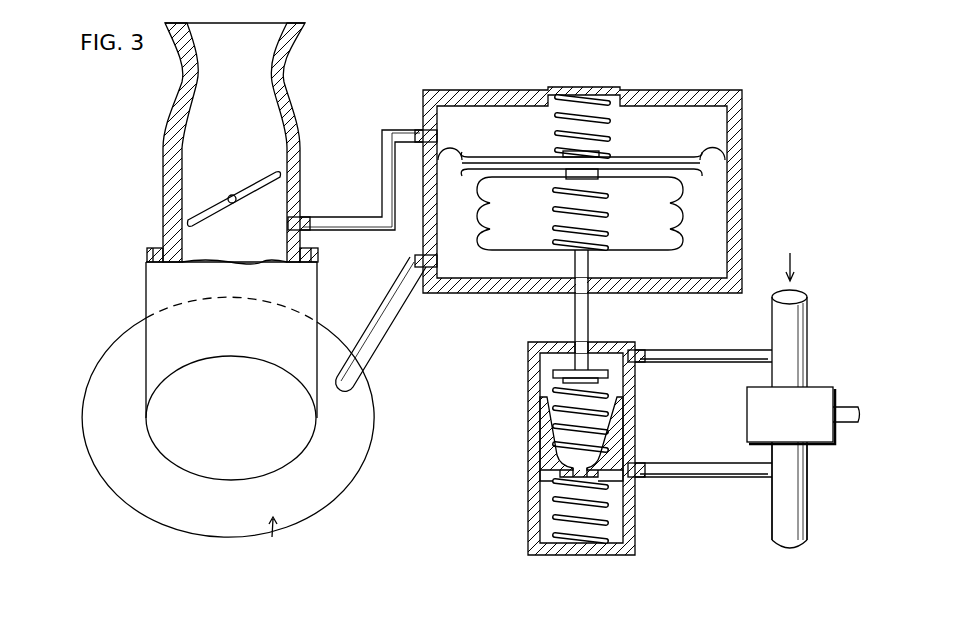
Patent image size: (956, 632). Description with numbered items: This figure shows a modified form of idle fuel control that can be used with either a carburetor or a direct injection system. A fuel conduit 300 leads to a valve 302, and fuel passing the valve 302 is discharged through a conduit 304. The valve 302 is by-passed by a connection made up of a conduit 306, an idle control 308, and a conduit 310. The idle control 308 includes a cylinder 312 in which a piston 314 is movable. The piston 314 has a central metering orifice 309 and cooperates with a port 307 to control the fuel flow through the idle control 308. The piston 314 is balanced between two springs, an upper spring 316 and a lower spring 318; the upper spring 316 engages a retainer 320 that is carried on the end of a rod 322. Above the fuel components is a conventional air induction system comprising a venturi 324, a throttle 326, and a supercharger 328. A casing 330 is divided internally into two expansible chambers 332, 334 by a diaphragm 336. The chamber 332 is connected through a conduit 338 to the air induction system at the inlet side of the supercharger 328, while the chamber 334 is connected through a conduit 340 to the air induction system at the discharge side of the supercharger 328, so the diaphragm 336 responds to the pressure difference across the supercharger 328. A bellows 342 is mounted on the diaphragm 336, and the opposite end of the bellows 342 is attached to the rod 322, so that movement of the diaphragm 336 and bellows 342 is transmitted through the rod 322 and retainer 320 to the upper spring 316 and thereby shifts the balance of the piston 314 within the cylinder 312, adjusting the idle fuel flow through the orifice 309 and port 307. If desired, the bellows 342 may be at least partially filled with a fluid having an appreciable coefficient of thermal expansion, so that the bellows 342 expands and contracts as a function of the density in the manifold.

The fuel conduit 300 is at (782, 324).
The valve 302 is at (752, 418).
The conduit 304 is at (775, 512).
The conduit 306 is at (691, 478).
The port 307 is at (623, 465).
The idle control 308 is at (500, 457).
The central metering orifice 309 is at (578, 471).
The conduit 310 is at (687, 359).
The cylinder 312 is at (535, 373).
The piston 314 is at (618, 435).
The upper spring 316 is at (600, 395).
The spring 318 is at (603, 521).
The retainer 320 is at (596, 370).
The rod 322 is at (575, 316).
The venturi 324 is at (268, 65).
The throttle 326 is at (254, 190).
The supercharger 328 is at (357, 441).
The casing 330 is at (734, 139).
The chamber 332 is at (685, 145).
The chamber 334 is at (704, 280).
The diaphragm 336 is at (462, 150).
The conduit 338 is at (355, 220).
The conduit 340 is at (382, 320).
The bellows 342 is at (479, 232).